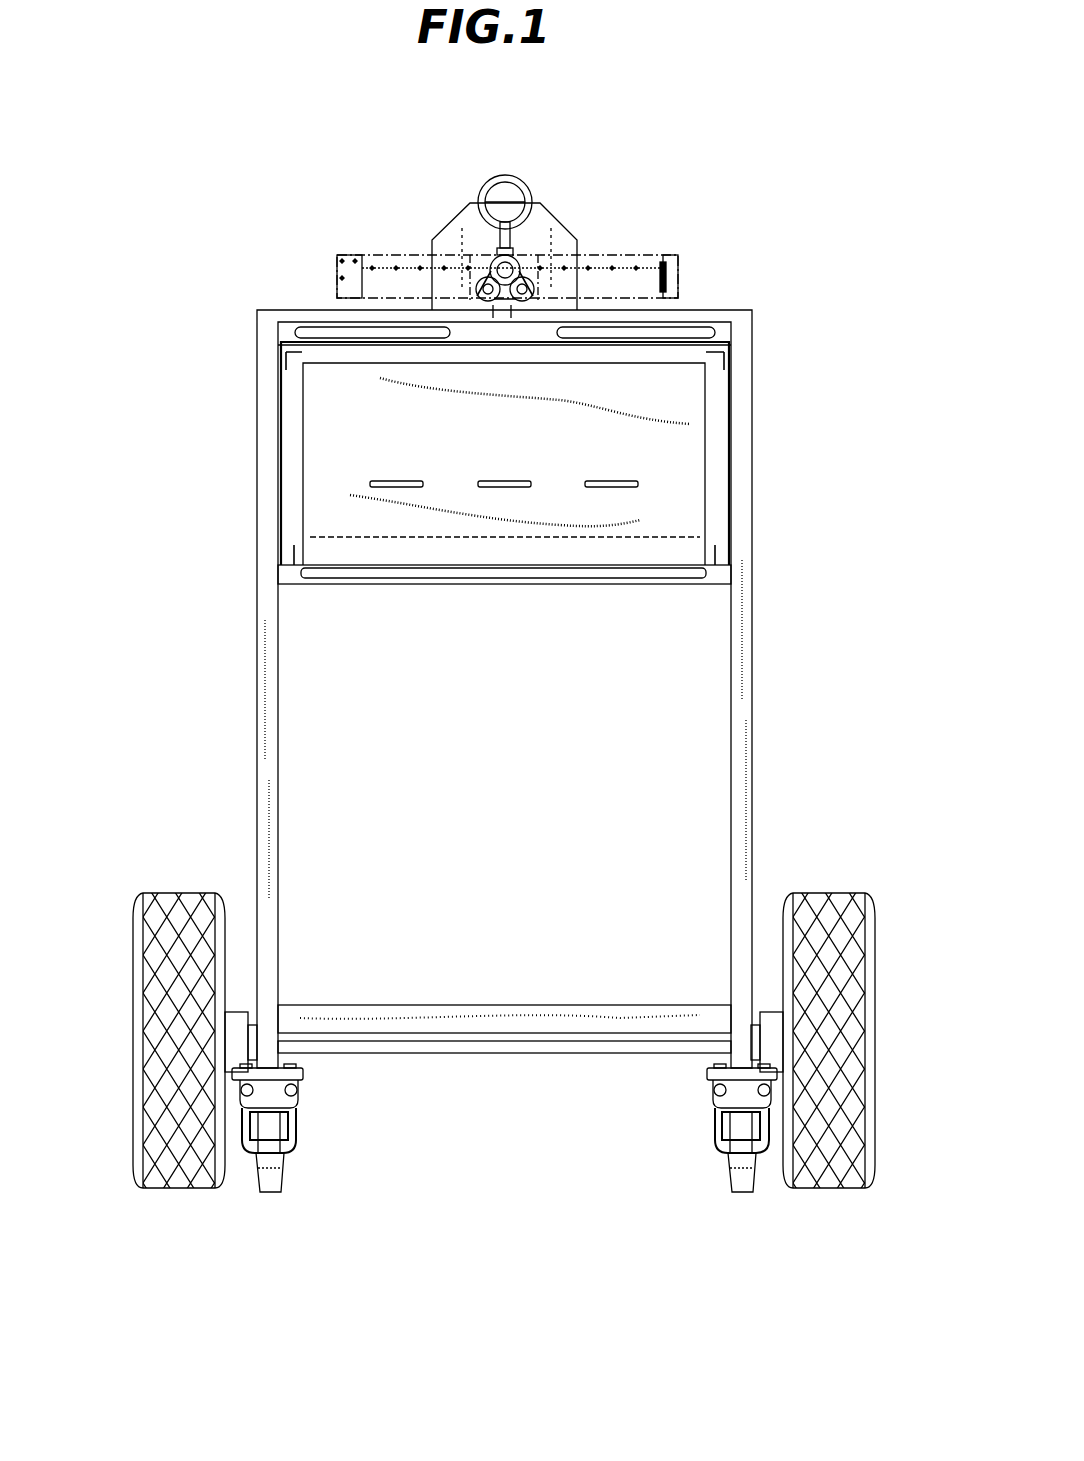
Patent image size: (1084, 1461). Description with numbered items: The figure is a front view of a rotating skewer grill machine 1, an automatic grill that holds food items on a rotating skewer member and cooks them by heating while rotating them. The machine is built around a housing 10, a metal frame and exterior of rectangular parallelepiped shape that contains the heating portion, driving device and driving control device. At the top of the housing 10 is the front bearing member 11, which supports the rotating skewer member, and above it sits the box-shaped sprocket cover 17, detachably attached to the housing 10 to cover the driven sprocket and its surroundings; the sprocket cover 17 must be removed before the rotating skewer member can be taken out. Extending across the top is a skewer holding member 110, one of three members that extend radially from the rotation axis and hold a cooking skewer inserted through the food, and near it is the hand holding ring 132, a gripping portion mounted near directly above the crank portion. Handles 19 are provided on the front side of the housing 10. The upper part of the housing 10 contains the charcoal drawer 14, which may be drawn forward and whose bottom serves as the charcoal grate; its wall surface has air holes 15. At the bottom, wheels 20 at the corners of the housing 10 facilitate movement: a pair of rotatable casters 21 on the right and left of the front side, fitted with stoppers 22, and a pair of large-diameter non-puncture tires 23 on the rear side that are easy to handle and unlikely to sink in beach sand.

The rotating skewer grill machine 1 is at (188, 125).
The housing 10 is at (742, 438).
The front bearing member 11 is at (538, 255).
The charcoal drawer 14 is at (317, 412).
The air holes 15 is at (399, 478).
The sprocket cover 17 is at (445, 240).
The handles 19 is at (320, 328).
The wheels 20 is at (183, 1240).
The rotatable casters 21 is at (270, 1205).
The stoppers 22 is at (313, 1087).
The tires 23 is at (163, 1148).
The skewer holding member 110 is at (650, 235).
The hand holding ring 132 is at (520, 180).